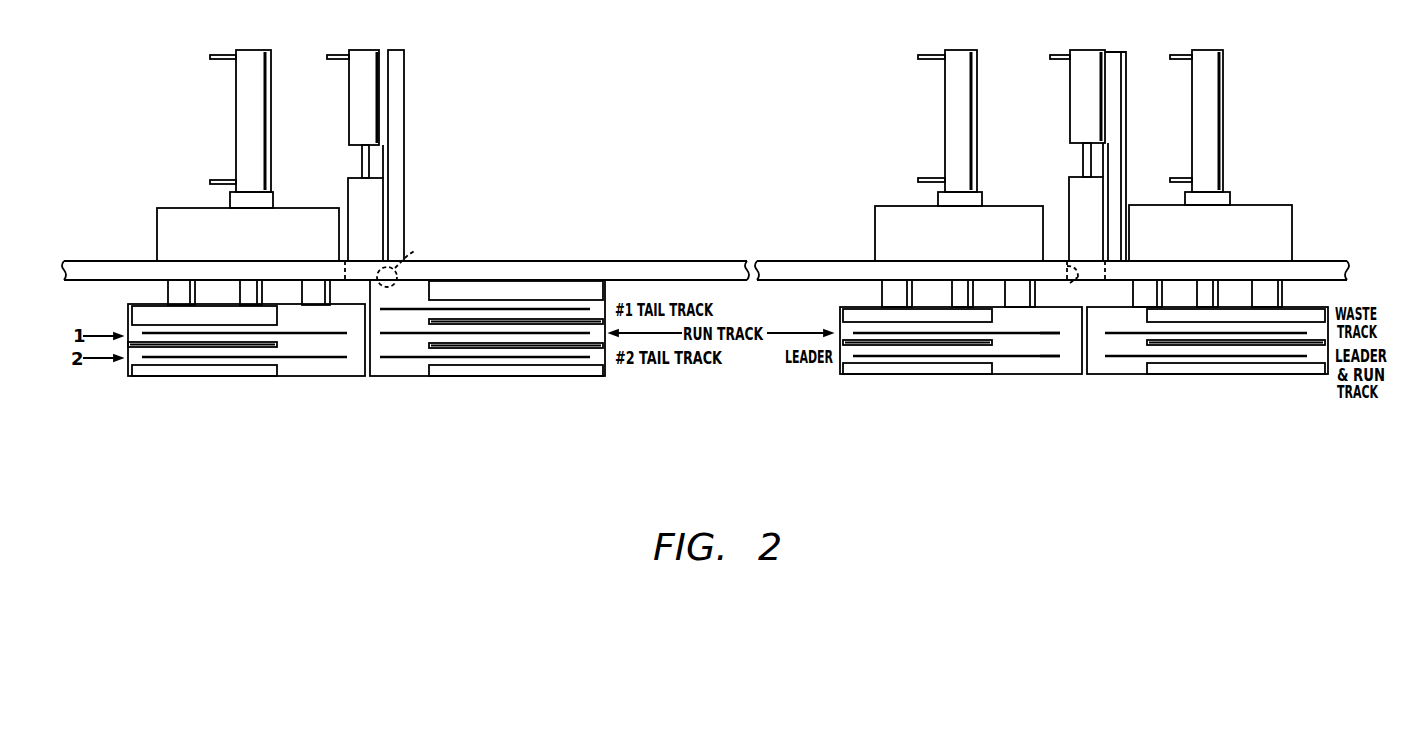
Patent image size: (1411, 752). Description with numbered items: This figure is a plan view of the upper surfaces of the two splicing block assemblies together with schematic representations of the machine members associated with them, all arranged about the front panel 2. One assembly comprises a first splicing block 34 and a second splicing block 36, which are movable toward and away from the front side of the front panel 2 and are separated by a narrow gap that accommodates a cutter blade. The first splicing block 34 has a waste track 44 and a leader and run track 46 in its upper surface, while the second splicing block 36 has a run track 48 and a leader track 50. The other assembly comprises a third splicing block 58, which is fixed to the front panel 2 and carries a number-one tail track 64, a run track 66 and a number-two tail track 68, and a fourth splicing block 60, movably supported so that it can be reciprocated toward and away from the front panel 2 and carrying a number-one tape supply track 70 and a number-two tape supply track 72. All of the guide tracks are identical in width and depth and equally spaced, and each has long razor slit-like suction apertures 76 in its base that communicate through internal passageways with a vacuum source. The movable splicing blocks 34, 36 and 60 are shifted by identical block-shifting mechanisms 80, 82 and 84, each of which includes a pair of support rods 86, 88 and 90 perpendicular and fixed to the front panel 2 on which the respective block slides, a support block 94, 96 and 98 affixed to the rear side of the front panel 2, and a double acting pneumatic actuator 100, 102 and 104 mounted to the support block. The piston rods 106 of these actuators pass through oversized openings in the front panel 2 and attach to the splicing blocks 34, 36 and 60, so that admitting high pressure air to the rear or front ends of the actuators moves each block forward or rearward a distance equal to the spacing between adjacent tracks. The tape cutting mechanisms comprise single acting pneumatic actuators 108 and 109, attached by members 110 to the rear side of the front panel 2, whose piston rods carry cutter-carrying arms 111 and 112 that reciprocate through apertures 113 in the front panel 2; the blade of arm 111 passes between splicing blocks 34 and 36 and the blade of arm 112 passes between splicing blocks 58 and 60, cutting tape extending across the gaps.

The front panel 2 is at (685, 262).
The first splicing block 34 is at (1217, 348).
The second splicing block 36 is at (934, 350).
The waste track 44 is at (1315, 325).
The leader and run track 46 is at (1320, 356).
The run track 48 is at (840, 330).
The leader track 50 is at (840, 358).
The third splicing block 58 is at (512, 345).
The fourth splicing block 60 is at (221, 353).
The #1 tail track 64 is at (605, 308).
The run track 66 is at (601, 357).
The #2 tail track 68 is at (602, 343).
The #1 tape supply track 70 is at (128, 333).
The #2 tape supply track 72 is at (128, 360).
The suction apertures 76 is at (1043, 334).
The block-shifting mechanism 80 is at (1231, 162).
The block-shifting mechanism 82 is at (993, 162).
The block-shifting mechanism 84 is at (277, 162).
The support rods 86 is at (1148, 290).
The support rods 88 is at (893, 287).
The support rods 90 is at (183, 288).
The support block 94 is at (1285, 222).
The support block 96 is at (880, 206).
The support block 98 is at (170, 207).
The double acting pneumatic actuator 100 is at (1200, 50).
The double acting pneumatic actuator 102 is at (960, 50).
The double acting pneumatic actuator 104 is at (256, 50).
The piston rods 106 is at (250, 287).
The single acting pneumatic actuator 108 is at (1083, 50).
The single acting pneumatic actuator 109 is at (366, 50).
The members 110 is at (402, 87).
The cutter-carrying arm 111 is at (1075, 190).
The cutter-carrying arm 112 is at (352, 192).
The apertures 113 is at (725, 268).